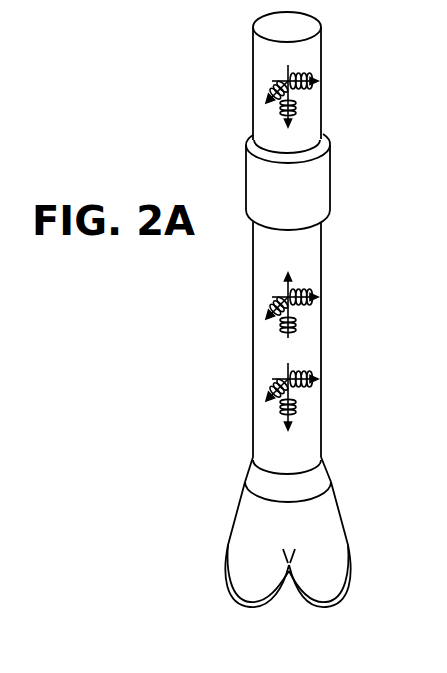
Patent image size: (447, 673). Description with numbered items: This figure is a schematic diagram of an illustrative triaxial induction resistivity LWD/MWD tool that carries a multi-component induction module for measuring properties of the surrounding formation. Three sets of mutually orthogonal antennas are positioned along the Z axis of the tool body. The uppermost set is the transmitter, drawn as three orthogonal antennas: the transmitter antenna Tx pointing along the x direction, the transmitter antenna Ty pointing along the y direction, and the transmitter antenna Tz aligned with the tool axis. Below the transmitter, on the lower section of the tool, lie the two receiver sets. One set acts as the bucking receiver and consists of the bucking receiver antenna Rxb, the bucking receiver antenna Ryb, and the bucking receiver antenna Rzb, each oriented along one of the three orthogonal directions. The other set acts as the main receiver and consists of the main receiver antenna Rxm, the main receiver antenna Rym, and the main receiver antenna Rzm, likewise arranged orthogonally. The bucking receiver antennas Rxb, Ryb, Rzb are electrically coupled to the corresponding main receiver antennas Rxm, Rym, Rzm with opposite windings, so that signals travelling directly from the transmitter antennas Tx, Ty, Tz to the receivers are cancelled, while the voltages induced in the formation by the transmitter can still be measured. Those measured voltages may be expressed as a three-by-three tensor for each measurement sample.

The transmitter antenna Tx is at (321, 85).
The transmitter antenna Ty is at (266, 106).
The transmitter antenna Tz is at (299, 115).
The bucking receiver antenna Rxb is at (320, 301).
The bucking receiver antenna Ryb is at (267, 323).
The bucking receiver antenna Rzb is at (290, 290).
The main receiver antenna Rxm is at (323, 383).
The main receiver antenna Rym is at (267, 405).
The main receiver antenna Rzm is at (293, 422).